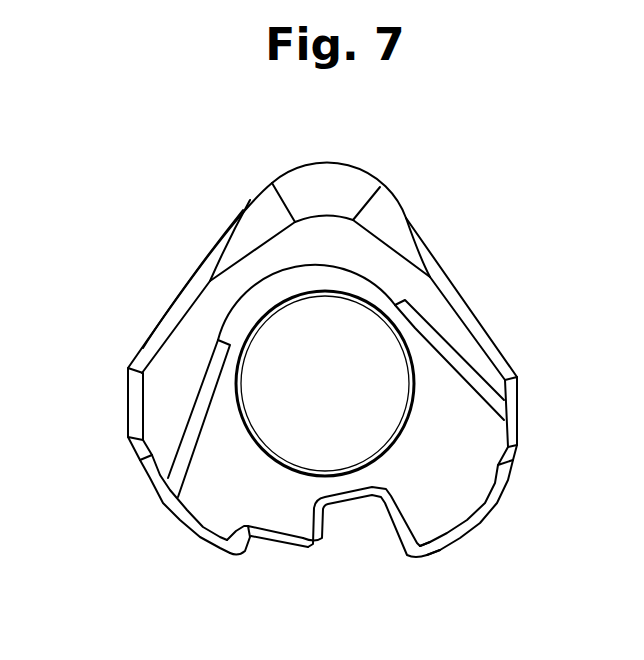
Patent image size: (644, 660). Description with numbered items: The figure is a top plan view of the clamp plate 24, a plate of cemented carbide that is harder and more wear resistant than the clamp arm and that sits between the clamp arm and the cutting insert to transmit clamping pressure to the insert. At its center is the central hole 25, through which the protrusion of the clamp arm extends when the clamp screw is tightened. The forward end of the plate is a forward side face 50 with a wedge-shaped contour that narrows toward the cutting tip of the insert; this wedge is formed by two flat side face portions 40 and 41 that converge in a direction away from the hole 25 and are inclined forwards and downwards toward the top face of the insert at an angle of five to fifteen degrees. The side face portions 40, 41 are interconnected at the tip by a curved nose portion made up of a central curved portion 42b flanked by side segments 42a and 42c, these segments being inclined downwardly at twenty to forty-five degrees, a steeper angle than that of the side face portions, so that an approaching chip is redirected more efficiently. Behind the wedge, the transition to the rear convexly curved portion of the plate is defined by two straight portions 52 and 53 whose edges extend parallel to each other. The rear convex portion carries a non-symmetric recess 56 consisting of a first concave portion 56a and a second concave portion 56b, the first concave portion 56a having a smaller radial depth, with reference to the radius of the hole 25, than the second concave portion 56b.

The clamp plate 24 is at (396, 199).
The central hole 25 is at (382, 300).
The flat side face portion 40 is at (170, 316).
The flat side face portion 41 is at (477, 325).
The side segment 42a is at (263, 220).
The central curved portion 42b is at (325, 185).
The side segment 42c is at (393, 224).
The forward side face 50 is at (196, 273).
The straight portion 52 is at (127, 403).
The straight portion 53 is at (519, 412).
The non-symmetric recess 56 is at (383, 535).
The first concave portion 56a is at (277, 542).
The second concave portion 56b is at (352, 505).